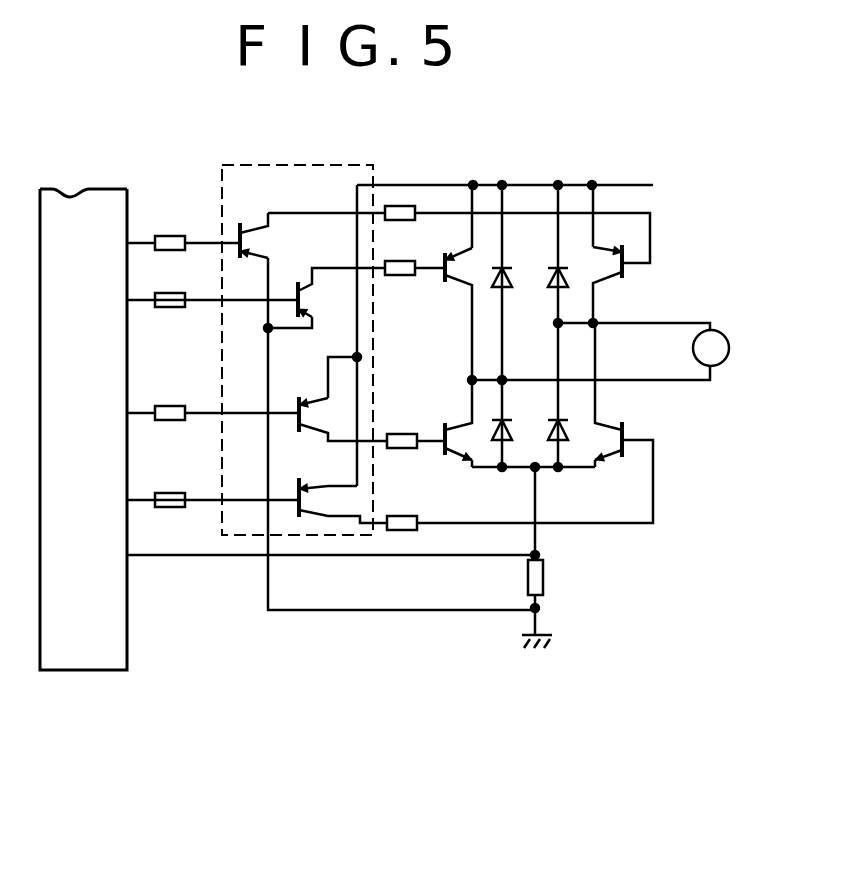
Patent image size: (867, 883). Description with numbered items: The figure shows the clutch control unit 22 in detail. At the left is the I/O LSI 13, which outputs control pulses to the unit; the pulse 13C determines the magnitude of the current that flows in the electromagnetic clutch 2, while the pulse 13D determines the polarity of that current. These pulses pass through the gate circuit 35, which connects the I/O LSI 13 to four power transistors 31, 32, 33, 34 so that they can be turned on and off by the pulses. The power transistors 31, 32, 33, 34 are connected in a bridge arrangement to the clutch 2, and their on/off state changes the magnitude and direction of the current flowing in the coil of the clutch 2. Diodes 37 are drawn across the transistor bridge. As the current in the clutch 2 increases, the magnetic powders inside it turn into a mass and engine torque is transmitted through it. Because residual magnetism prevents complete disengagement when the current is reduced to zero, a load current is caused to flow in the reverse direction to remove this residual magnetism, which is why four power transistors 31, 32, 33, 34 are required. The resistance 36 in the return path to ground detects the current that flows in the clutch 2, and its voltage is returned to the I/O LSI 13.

The I/O LSI 13 is at (82, 190).
The pulse 13D is at (148, 243).
The pulse 13C is at (146, 413).
The gate circuit 35 is at (301, 174).
The power transistor 32 is at (456, 248).
The protection diodes 37 is at (538, 222).
The power transistor 31 is at (612, 278).
The electromagnetic clutch 2 is at (716, 336).
The power transistor 33 is at (610, 432).
The power transistor 34 is at (465, 456).
The resistance 36 is at (546, 572).
The clutch control unit 22 is at (246, 608).